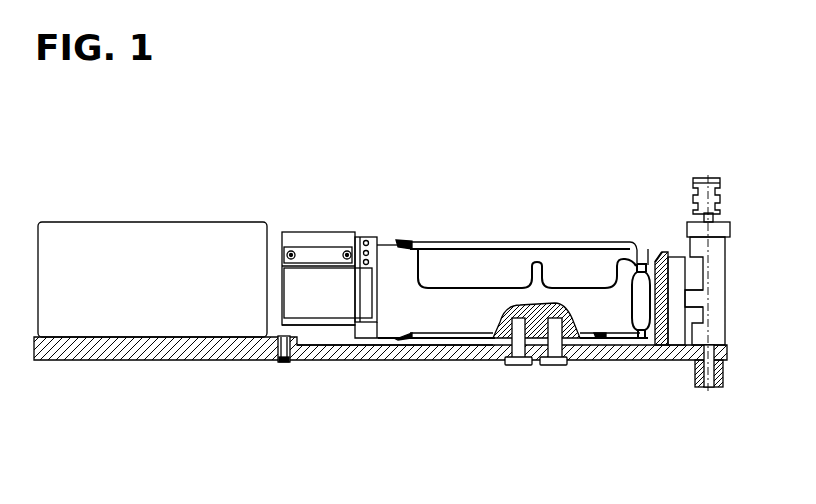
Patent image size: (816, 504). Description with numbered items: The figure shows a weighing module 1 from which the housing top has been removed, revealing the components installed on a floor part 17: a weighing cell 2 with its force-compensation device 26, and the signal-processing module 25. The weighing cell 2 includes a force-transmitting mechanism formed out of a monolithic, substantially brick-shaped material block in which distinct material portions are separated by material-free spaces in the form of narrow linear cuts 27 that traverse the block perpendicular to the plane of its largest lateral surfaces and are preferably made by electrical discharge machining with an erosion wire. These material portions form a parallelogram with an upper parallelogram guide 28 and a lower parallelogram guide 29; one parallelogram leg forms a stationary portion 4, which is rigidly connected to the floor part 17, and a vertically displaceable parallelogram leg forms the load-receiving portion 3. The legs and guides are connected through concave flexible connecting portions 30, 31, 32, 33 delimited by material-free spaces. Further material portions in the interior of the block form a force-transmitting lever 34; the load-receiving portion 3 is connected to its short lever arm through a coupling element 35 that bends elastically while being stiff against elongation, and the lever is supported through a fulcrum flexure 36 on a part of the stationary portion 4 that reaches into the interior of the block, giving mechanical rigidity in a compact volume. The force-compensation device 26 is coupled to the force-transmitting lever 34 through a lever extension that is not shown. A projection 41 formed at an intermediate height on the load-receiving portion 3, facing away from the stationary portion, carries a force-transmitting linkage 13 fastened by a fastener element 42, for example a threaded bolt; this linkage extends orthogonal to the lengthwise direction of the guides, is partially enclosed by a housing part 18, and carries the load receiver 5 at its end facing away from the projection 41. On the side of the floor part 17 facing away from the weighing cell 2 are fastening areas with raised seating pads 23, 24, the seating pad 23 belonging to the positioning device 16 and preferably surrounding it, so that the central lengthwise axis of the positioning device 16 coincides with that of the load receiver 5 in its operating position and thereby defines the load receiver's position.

The weighing module 1 is at (209, 203).
The weighing cell 2 is at (490, 232).
The load-receiving portion 3 is at (680, 325).
The stationary portion 4 is at (400, 296).
The load receiver 5 is at (722, 192).
The force-transmitting linkage 13 is at (703, 270).
The positioning device 16 is at (723, 373).
The floor part 17 is at (352, 360).
The housing part 18 is at (720, 292).
The seating pad 23 is at (693, 362).
The seating pad 24 is at (270, 370).
The signal-processing module 25 is at (102, 262).
The force-compensation device 26 is at (322, 298).
The narrow linear cuts 27 is at (569, 288).
The upper parallelogram guide 28 is at (467, 242).
The lower parallelogram guide 29 is at (428, 345).
The flexible connecting portion 30 is at (400, 350).
The flexible connecting portion 31 is at (627, 360).
The flexible connecting portion 32 is at (647, 278).
The flexible connecting portion 33 is at (403, 243).
The force-transmitting lever 34 is at (555, 268).
The coupling element 35 is at (657, 262).
The fulcrum flexure 36 is at (537, 264).
The projection 41 is at (700, 298).
The fastener element 42 is at (705, 308).